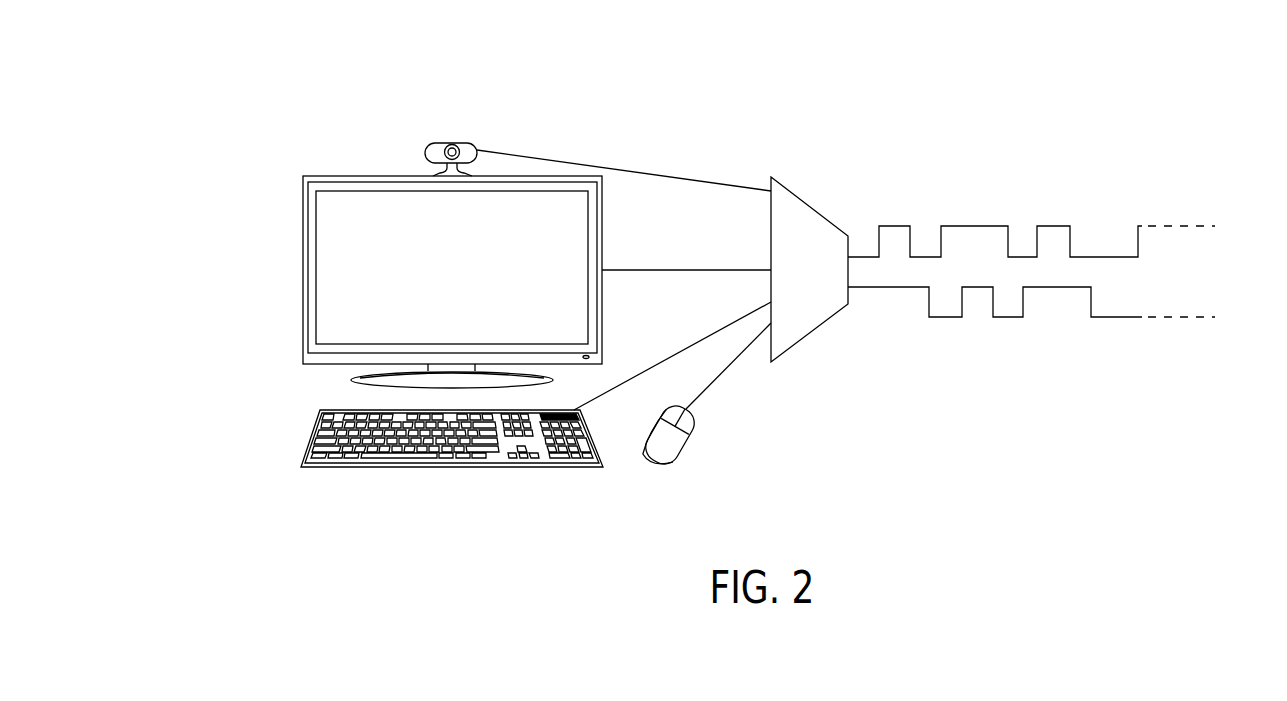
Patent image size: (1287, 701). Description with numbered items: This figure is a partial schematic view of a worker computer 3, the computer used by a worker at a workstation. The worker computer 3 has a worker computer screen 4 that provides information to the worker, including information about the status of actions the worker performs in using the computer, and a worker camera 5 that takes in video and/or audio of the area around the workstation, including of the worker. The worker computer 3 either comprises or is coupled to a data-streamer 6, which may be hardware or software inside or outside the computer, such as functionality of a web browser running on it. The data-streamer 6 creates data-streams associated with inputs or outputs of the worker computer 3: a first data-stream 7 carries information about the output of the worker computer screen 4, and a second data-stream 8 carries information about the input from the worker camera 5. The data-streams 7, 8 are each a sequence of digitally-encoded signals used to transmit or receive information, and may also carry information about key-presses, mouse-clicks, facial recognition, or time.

The worker computer 3 is at (248, 117).
The worker computer screen 4 is at (302, 302).
The worker camera 5 is at (470, 142).
The data-streamer 6 is at (805, 197).
The first data-stream 7 is at (978, 226).
The second data-stream 8 is at (1005, 318).